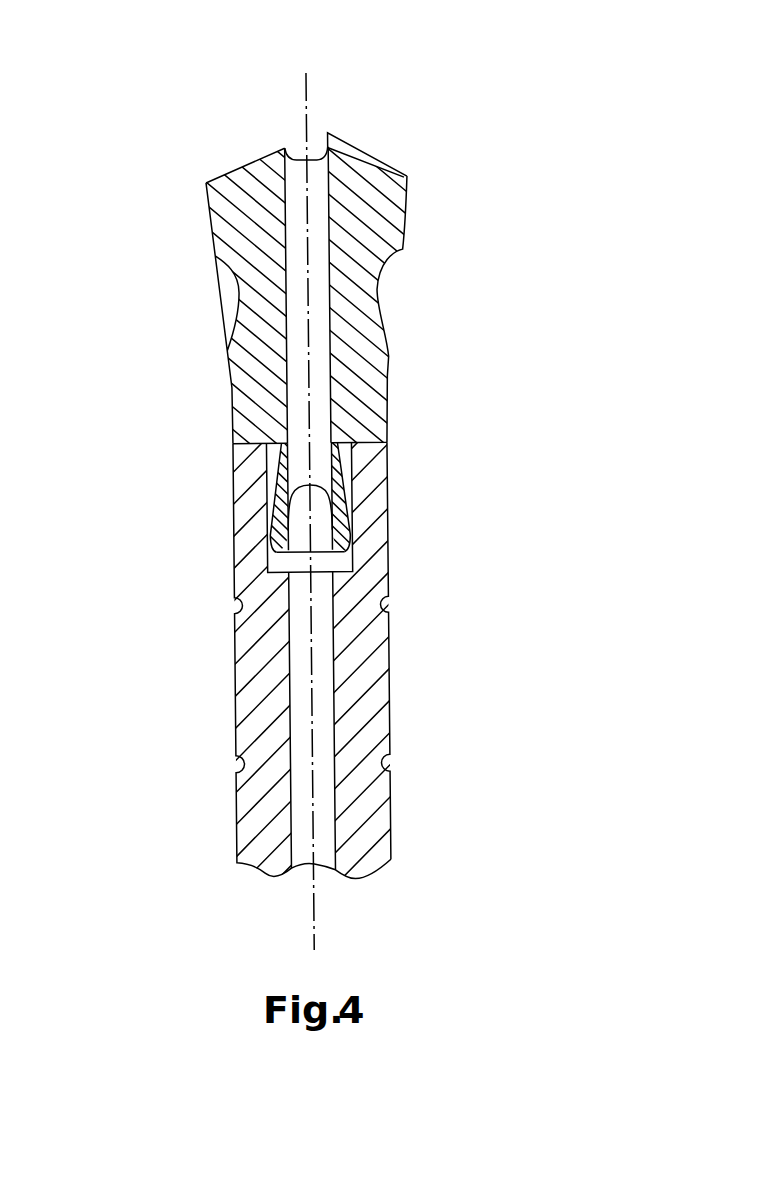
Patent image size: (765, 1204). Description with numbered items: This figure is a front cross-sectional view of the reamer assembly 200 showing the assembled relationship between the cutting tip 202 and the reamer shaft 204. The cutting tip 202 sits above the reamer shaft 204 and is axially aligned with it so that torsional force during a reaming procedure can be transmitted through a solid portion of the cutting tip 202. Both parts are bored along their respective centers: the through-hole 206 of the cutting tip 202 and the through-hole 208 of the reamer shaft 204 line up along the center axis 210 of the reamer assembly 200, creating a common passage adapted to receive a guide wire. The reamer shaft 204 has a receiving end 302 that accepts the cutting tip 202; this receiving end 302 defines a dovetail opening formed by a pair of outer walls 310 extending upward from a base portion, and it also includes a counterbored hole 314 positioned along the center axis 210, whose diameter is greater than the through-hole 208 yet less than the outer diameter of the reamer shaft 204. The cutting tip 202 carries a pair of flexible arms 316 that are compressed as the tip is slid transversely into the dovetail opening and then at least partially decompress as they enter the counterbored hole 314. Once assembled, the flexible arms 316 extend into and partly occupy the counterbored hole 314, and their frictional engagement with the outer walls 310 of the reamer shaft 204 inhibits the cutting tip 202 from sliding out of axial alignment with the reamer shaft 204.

The reamer assembly 200 is at (168, 145).
The cutting tip 202 is at (365, 158).
The reamer shaft 204 is at (390, 710).
The through-hole 206 is at (317, 298).
The through-hole 208 is at (302, 813).
The center axis 210 is at (310, 96).
The receiving end 302 is at (195, 455).
The outer walls 310 is at (240, 498).
The counterbored hole 314 is at (337, 563).
The flexible arms 316 is at (347, 531).